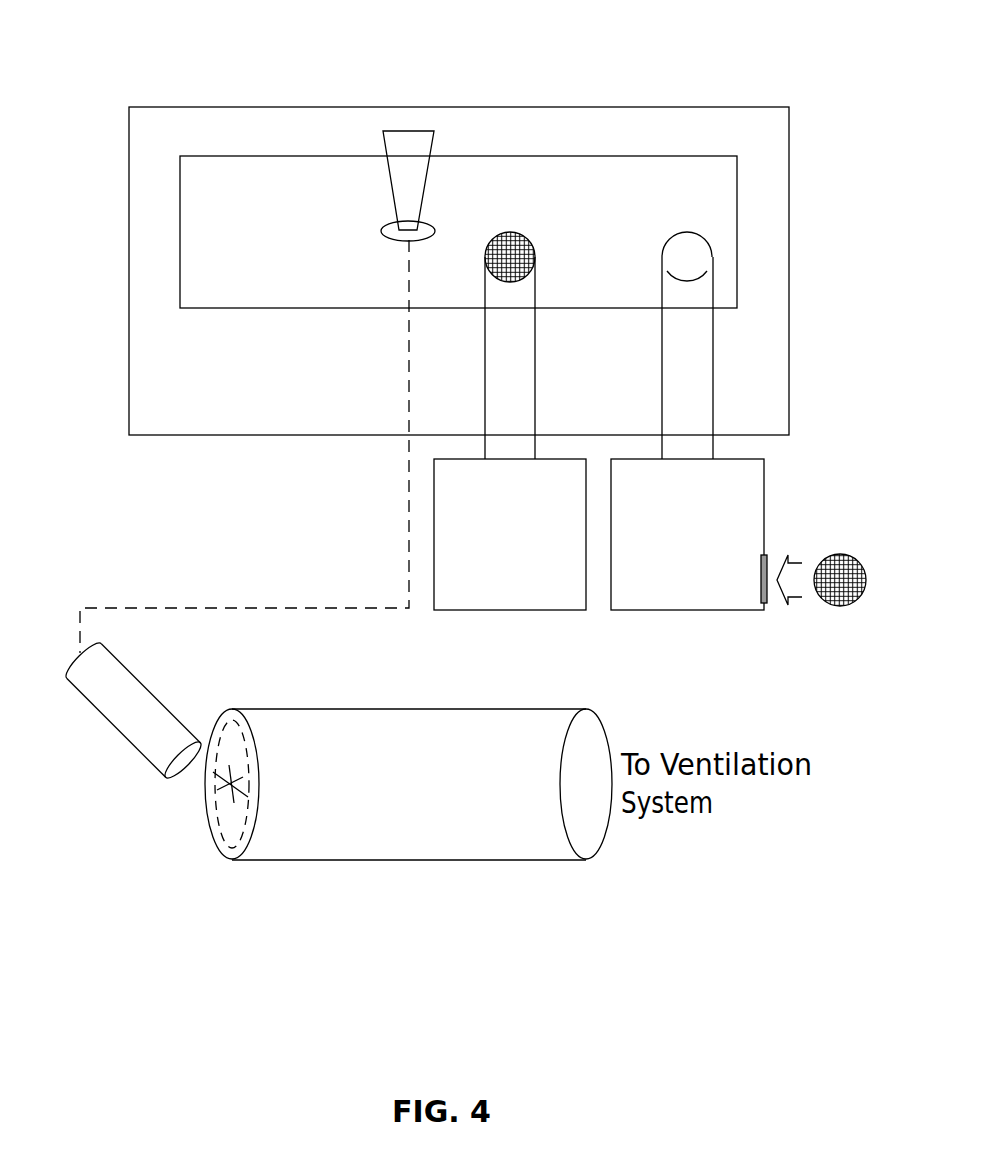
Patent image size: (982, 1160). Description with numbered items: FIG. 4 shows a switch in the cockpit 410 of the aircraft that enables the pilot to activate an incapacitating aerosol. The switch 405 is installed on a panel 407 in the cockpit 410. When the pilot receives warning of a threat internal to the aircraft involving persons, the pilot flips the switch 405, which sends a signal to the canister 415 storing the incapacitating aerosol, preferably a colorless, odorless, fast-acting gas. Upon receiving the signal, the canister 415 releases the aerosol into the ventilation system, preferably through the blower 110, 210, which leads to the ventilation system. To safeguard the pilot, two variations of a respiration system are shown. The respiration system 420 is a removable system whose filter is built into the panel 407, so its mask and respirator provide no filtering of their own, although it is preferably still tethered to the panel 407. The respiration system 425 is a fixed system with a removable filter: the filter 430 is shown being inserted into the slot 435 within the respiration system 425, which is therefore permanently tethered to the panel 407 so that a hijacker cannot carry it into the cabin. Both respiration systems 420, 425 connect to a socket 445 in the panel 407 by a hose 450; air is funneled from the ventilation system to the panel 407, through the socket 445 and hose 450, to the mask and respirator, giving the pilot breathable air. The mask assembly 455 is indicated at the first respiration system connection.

The switch 405 is at (408, 64).
The cockpit 410 is at (173, 107).
The panel 407 is at (222, 156).
The mask assembly 455 is at (549, 197).
The socket 445 is at (662, 257).
The hose 450 is at (662, 357).
The respiration system 420 is at (476, 611).
The respiration system 425 is at (652, 611).
The filter 430 is at (840, 518).
The slot 435 is at (781, 625).
The canister 415 is at (121, 734).
The blower 110 is at (373, 803).
The blower 210 is at (251, 859).